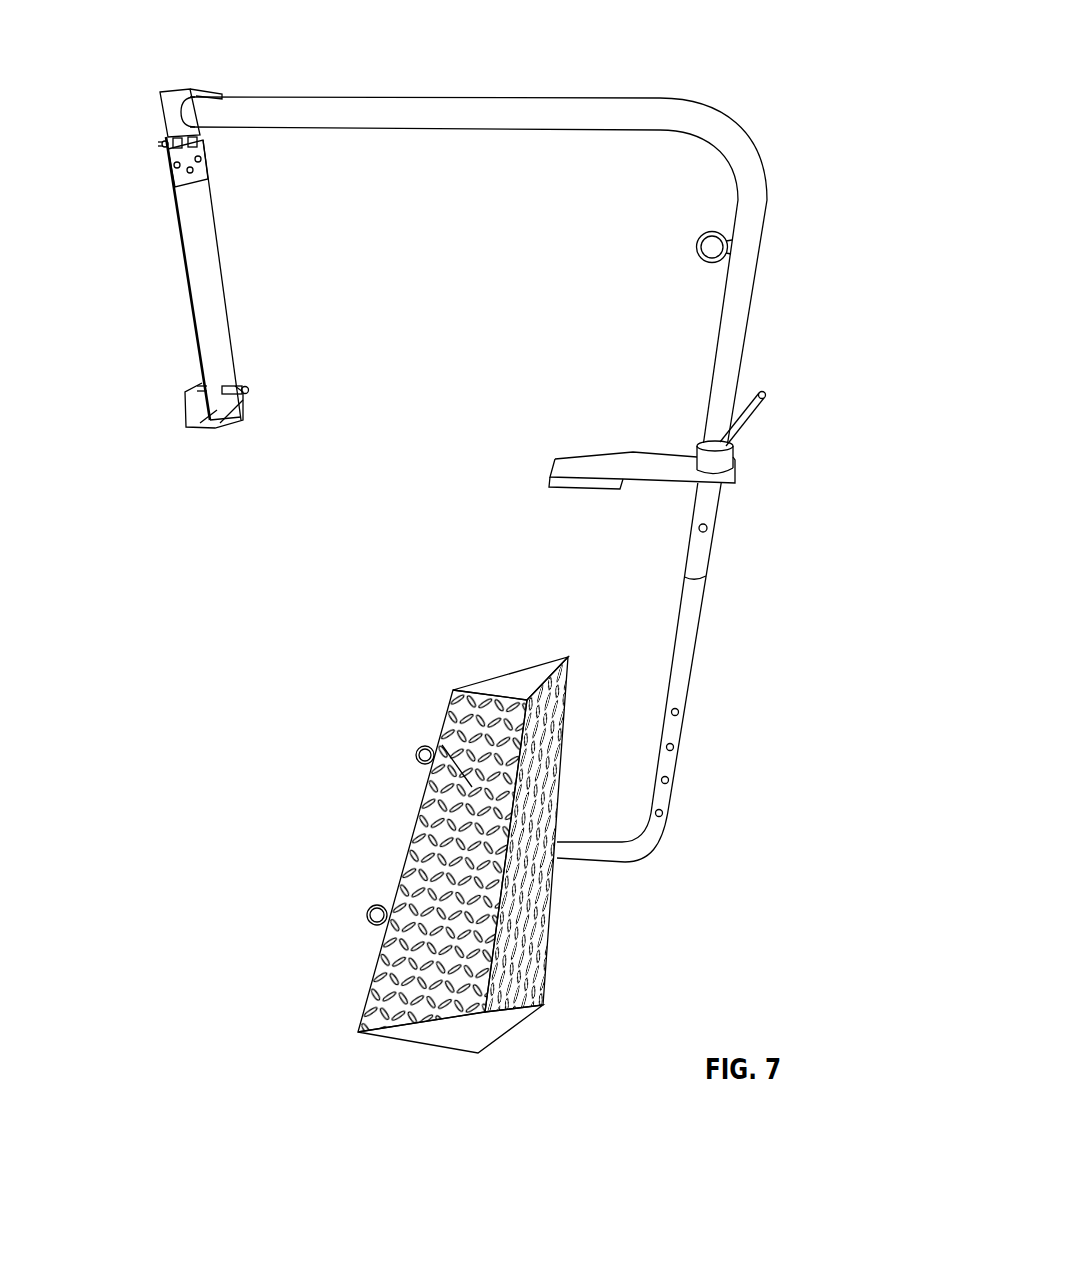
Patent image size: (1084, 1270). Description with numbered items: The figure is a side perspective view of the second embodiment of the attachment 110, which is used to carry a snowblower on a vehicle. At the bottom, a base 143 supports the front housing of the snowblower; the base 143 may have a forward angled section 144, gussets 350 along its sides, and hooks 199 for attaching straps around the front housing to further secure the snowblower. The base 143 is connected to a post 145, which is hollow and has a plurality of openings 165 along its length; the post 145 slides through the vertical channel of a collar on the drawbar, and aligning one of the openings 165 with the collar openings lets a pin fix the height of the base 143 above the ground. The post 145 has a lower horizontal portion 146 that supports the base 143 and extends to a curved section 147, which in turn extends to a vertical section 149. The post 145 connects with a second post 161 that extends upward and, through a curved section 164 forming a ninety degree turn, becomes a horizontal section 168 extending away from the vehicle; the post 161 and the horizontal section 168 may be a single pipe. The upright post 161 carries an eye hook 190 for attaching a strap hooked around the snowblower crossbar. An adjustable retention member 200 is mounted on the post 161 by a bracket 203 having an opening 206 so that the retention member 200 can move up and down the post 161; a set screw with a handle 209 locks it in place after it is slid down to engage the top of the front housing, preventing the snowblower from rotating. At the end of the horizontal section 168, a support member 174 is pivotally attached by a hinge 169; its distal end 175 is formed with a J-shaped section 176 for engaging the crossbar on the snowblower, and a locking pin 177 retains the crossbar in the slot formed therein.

The attachment 110 is at (749, 74).
The horizontal section 168 is at (491, 107).
The curved section 164 is at (752, 143).
The second post 161 is at (744, 272).
The eye hook 190 is at (702, 236).
The adjustable retention member 200 is at (572, 433).
The bracket 203 is at (665, 458).
The opening 206 is at (734, 450).
The handle 209 is at (766, 392).
The post 145 is at (748, 586).
The vertical section 149 is at (690, 643).
The openings 165 is at (679, 714).
The horizontal portion 146 is at (596, 860).
The curved section 147 is at (645, 853).
The gussets 350 is at (518, 678).
The base 143 is at (460, 700).
The forward angled section 144 is at (543, 968).
The hooks 199 is at (437, 752).
The distal end 175 is at (192, 459).
The hinge 169 is at (165, 146).
The support member 174 is at (192, 280).
The J-shaped section 176 is at (190, 406).
The locking pin 177 is at (240, 386).